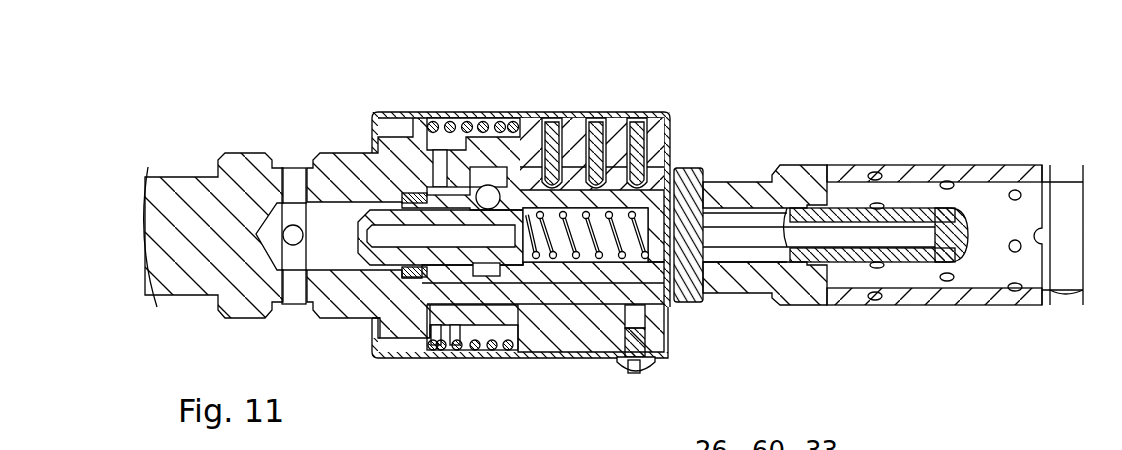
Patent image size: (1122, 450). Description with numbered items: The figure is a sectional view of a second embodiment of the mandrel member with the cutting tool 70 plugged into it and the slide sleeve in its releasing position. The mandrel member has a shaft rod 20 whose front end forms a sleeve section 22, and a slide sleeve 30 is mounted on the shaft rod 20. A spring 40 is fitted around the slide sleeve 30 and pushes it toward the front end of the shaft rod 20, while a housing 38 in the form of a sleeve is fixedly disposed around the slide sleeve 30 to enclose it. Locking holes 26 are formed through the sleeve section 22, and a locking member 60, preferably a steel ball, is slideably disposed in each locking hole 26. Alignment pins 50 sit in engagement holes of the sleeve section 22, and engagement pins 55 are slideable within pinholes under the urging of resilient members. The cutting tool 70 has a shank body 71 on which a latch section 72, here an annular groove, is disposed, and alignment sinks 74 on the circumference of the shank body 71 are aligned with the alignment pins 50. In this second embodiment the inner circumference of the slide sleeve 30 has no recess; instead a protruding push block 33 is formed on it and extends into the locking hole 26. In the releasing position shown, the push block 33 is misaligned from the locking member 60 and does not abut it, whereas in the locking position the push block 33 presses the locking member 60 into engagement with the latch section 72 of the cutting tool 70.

The shaft rod 20 is at (248, 142).
The sleeve section 22 is at (603, 293).
The locking hole 26 is at (505, 187).
The slide sleeve 30 is at (517, 304).
The push block 33 is at (454, 172).
The housing 38 is at (433, 357).
The spring 40 is at (476, 355).
The alignment pin 50 is at (655, 212).
The engagement pin 55 is at (645, 160).
The locking member 60 is at (488, 188).
The cutting tool 70 is at (945, 160).
The shank body 71 is at (556, 270).
The latch section 72 is at (428, 195).
The alignment sink 74 is at (695, 185).